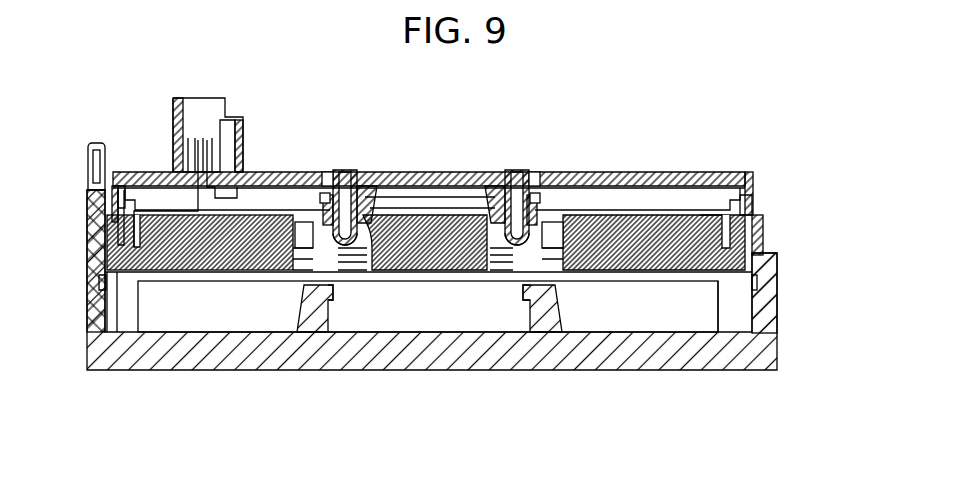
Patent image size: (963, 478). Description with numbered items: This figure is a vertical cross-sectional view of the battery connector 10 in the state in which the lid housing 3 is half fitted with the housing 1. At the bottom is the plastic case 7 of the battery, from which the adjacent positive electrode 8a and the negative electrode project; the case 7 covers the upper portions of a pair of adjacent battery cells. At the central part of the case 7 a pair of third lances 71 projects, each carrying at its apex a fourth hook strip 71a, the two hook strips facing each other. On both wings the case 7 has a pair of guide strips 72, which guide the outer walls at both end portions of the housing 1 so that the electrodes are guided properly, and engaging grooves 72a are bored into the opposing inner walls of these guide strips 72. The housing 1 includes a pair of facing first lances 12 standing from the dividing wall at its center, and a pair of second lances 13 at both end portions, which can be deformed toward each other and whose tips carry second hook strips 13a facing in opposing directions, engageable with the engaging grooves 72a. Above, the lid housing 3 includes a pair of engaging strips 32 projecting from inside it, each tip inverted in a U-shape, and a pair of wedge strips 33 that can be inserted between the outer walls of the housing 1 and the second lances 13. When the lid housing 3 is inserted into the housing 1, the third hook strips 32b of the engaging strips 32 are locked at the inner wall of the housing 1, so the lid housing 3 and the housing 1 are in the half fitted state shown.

The housing 1 is at (620, 237).
The lid housing 3 is at (753, 165).
The case 7 is at (778, 375).
The positive electrode 8a is at (700, 311).
The connector 10 is at (432, 140).
The first lance 12 is at (327, 200).
The second lance 13 is at (105, 238).
The second hook strip 13a is at (103, 212).
The engaging strip 32 is at (340, 178).
The third hook strip 32b is at (336, 232).
The wedge strip 33 is at (118, 185).
The third lance 71 is at (313, 318).
The fourth hook strip 71a is at (337, 296).
The guide strip 72 is at (95, 143).
The engaging groove 72a is at (102, 285).